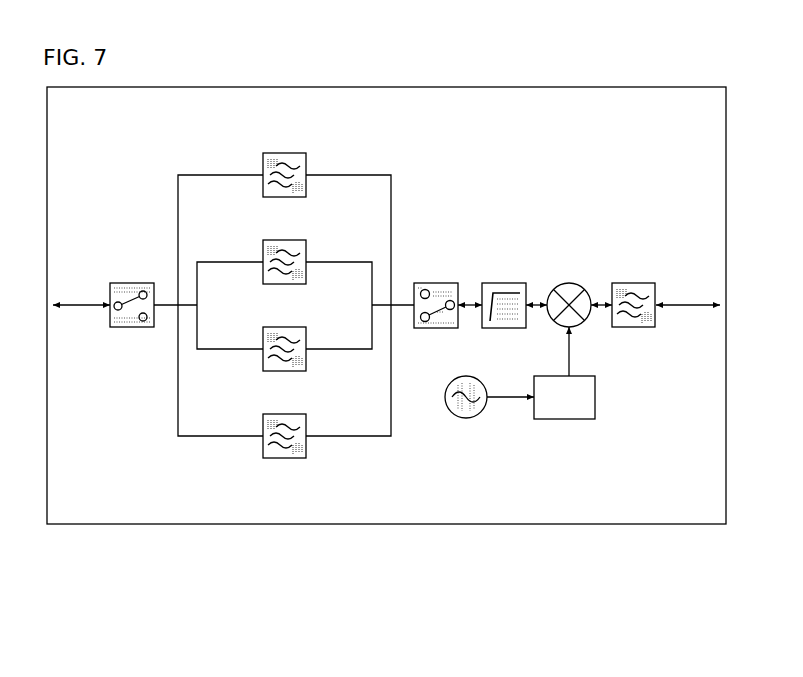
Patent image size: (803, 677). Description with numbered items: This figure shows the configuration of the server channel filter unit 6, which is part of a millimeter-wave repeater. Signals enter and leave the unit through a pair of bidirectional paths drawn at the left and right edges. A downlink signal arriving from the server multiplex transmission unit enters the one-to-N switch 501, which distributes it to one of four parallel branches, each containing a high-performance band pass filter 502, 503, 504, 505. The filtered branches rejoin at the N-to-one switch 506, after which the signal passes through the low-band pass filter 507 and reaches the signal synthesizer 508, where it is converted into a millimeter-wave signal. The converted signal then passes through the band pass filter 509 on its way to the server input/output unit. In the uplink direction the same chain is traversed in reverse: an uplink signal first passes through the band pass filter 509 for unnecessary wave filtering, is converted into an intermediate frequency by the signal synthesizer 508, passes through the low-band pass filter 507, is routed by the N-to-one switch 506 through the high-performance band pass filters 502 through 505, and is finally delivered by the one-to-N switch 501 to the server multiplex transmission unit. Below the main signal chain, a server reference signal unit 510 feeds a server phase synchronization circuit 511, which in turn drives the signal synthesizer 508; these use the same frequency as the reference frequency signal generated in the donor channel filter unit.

The server channel filter unit 6 is at (395, 524).
The 1:N switch 501 is at (132, 283).
The high-performance band pass filter 502 is at (287, 153).
The high-performance band pass filter 503 is at (306, 240).
The high-performance band pass filter 504 is at (306, 327).
The high-performance band pass filter 505 is at (287, 458).
The N:1 switch 506 is at (436, 283).
The low-band pass filter 507 is at (502, 283).
The signal synthesizer 508 is at (561, 287).
The band pass filter 509 is at (640, 283).
The server reference signal unit 510 is at (467, 418).
The server phase synchronization circuit 511 is at (567, 419).